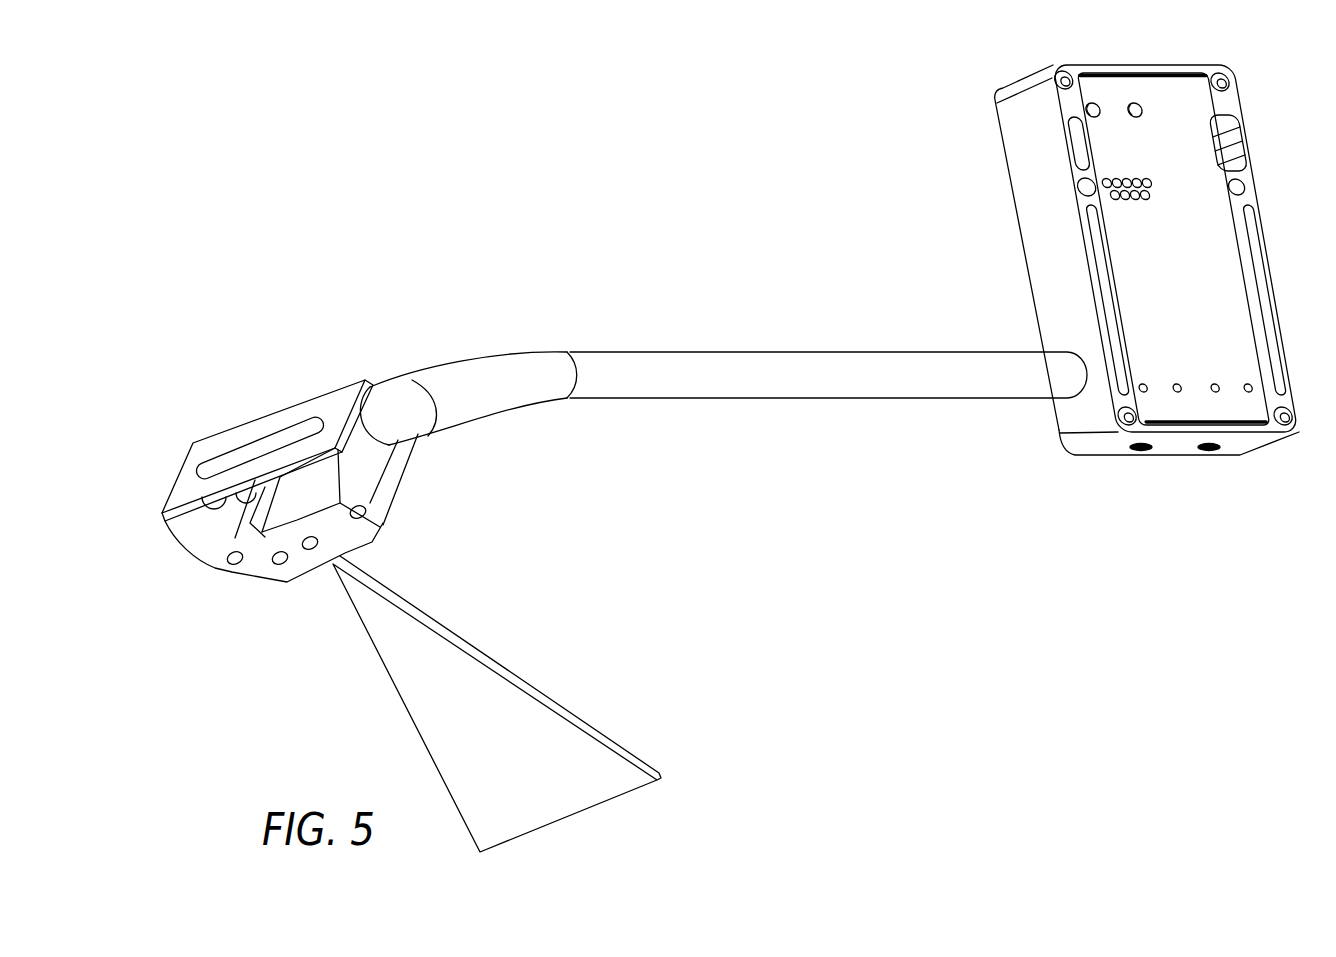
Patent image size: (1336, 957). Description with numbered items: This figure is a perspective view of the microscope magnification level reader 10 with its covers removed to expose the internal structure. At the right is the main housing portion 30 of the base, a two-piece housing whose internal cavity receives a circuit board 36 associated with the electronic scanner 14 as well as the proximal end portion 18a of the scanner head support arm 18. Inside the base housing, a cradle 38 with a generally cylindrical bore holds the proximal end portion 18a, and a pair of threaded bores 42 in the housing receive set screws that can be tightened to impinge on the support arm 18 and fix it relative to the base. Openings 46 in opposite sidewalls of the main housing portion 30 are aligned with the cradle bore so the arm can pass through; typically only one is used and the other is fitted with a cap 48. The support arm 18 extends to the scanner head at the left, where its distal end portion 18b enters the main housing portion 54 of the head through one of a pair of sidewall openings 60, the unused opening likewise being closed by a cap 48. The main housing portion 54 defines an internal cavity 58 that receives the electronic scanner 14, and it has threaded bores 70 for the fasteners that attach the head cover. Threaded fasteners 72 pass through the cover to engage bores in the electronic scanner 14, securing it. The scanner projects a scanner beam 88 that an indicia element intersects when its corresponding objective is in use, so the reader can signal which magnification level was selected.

The microscope magnification level reader 10 is at (672, 137).
The electronic scanner 14 is at (318, 562).
The scanner head support arm 18 is at (713, 350).
The proximal end portion of support arm 18a is at (992, 320).
The distal end portion of support arm 18b is at (390, 375).
The main housing portion 30 is at (1025, 167).
The circuit board 36 is at (1213, 290).
The cradle 38 is at (1248, 232).
The threaded bores 42 is at (1135, 460).
The openings 46 is at (1077, 348).
The cap 48 is at (203, 541).
The main housing portion 54 is at (335, 403).
The internal cavity 58 is at (207, 537).
The openings 60 is at (395, 452).
The threaded bores 70 is at (365, 523).
The threaded fasteners 72 is at (308, 551).
The scanner beam 88 is at (557, 703).